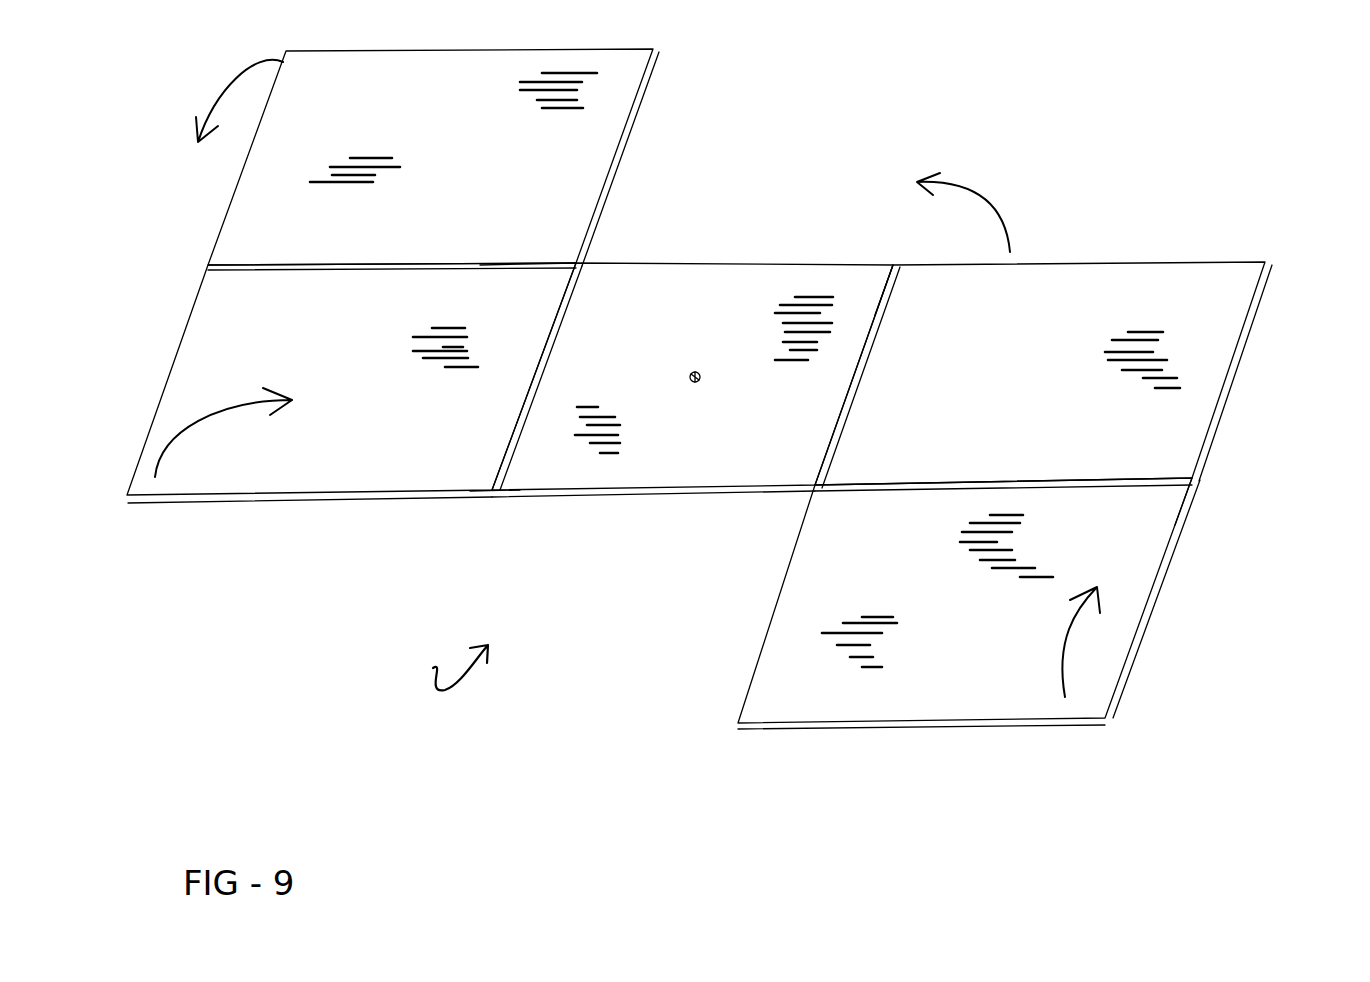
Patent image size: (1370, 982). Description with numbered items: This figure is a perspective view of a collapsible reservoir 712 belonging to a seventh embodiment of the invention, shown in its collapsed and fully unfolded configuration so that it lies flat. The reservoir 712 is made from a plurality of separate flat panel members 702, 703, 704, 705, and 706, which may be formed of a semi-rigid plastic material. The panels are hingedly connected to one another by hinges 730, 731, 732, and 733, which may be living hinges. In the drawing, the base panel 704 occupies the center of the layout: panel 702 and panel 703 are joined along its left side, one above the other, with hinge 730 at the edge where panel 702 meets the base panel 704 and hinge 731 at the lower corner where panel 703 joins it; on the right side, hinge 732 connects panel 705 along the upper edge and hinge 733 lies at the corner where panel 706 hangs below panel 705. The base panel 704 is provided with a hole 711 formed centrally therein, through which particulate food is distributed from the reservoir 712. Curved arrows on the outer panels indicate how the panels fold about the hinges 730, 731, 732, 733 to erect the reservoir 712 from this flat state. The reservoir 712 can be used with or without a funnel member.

The flat panel member 702 is at (504, 201).
The flat panel member 703 is at (430, 451).
The base panel 704 is at (660, 340).
The flat panel member 705 is at (983, 359).
The flat panel member 706 is at (893, 577).
The hole 711 is at (711, 340).
The collapsible reservoir 712 is at (433, 668).
The hinge 730 is at (527, 265).
The hinge 731 is at (492, 503).
The hinge 732 is at (893, 265).
The hinge 733 is at (1197, 480).